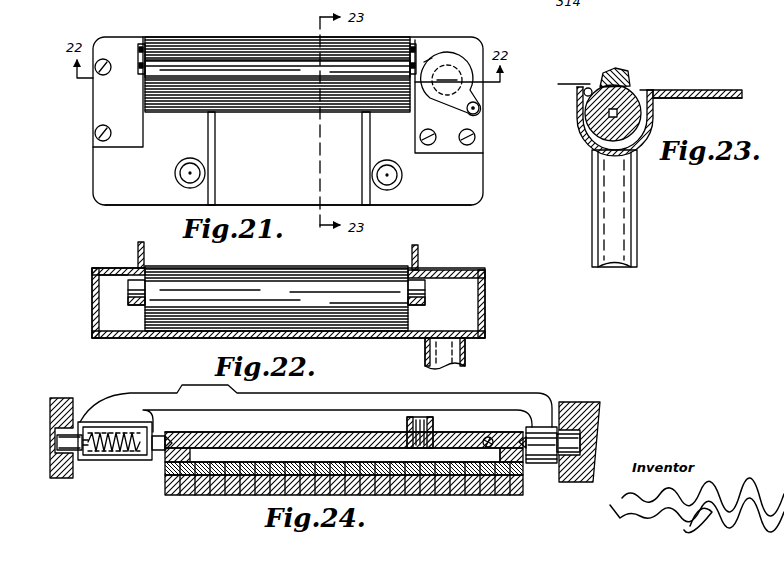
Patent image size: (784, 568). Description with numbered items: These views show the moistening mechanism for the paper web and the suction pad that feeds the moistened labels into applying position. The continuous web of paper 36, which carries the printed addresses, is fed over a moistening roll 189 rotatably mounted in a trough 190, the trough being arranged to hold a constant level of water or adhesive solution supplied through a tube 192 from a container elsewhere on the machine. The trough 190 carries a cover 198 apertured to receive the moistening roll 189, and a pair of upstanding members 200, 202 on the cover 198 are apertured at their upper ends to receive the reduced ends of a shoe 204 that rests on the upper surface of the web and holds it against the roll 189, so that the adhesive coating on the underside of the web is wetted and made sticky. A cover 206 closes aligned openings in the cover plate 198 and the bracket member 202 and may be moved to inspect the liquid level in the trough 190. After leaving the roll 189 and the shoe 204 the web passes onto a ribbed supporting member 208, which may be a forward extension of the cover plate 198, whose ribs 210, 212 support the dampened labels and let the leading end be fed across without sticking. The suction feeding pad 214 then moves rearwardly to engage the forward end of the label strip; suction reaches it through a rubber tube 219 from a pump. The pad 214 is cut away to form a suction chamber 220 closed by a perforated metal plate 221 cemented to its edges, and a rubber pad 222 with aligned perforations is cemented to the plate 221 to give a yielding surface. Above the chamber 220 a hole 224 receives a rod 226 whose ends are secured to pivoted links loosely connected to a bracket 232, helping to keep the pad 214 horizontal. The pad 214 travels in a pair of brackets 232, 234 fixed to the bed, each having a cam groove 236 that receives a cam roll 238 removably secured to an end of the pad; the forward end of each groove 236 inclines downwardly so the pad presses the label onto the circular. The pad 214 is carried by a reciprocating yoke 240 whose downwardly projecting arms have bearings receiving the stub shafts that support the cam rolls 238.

In FIG. 23, the continuous web of paper 36 is at (566, 84).
In FIG. 21, the moistening roll 189 is at (188, 105).
In FIG. 22, the moistening roll 189 is at (305, 275).
In FIG. 23, the moistening roll 189 is at (640, 90).
In FIG. 21, the trough 190 is at (272, 38).
In FIG. 22, the trough 190 is at (470, 305).
In FIG. 23, the trough 190 is at (580, 124).
In FIG. 22, the tube 192 is at (466, 368).
In FIG. 23, the tube 192 is at (600, 176).
In FIG. 21, the cover 198 is at (100, 170).
In FIG. 22, the cover 198 is at (93, 275).
In FIG. 23, the cover 198 is at (640, 88).
In FIG. 21, the upstanding member 200 is at (135, 72).
In FIG. 22, the upstanding member 200 is at (137, 250).
In FIG. 21, the upstanding member 202 is at (478, 122).
In FIG. 22, the upstanding member 202 is at (418, 258).
In FIG. 23, the upstanding member 202 is at (592, 86).
In FIG. 21, the shoe 204 is at (370, 74).
In FIG. 23, the shoe 204 is at (620, 72).
In FIG. 21, the cover 206 is at (450, 62).
In FIG. 21, the ribbed supporting member 208 is at (195, 196).
In FIG. 23, the ribbed supporting member 208 is at (711, 99).
In FIG. 21, the rib 210 is at (215, 176).
In FIG. 21, the rib 212 is at (362, 167).
In FIG. 23, the rib 212 is at (707, 90).
In FIG. 24, the suction feeding pad 214 is at (338, 432).
In FIG. 24, the rubber tube 219 is at (415, 417).
In FIG. 24, the suction chamber 220 is at (262, 425).
In FIG. 24, the perforated metal plate 221 is at (443, 460).
In FIG. 24, the rubber pad 222 is at (190, 496).
In FIG. 24, the hole 224 is at (508, 442).
In FIG. 24, the rod 226 is at (489, 436).
In FIG. 24, the bracket 232 is at (580, 402).
In FIG. 24, the bracket 234 is at (58, 405).
In FIG. 24, the cam groove 236 is at (73, 420).
In FIG. 24, the cam roll 238 is at (100, 421).
In FIG. 24, the reciprocating yoke 240 is at (512, 398).